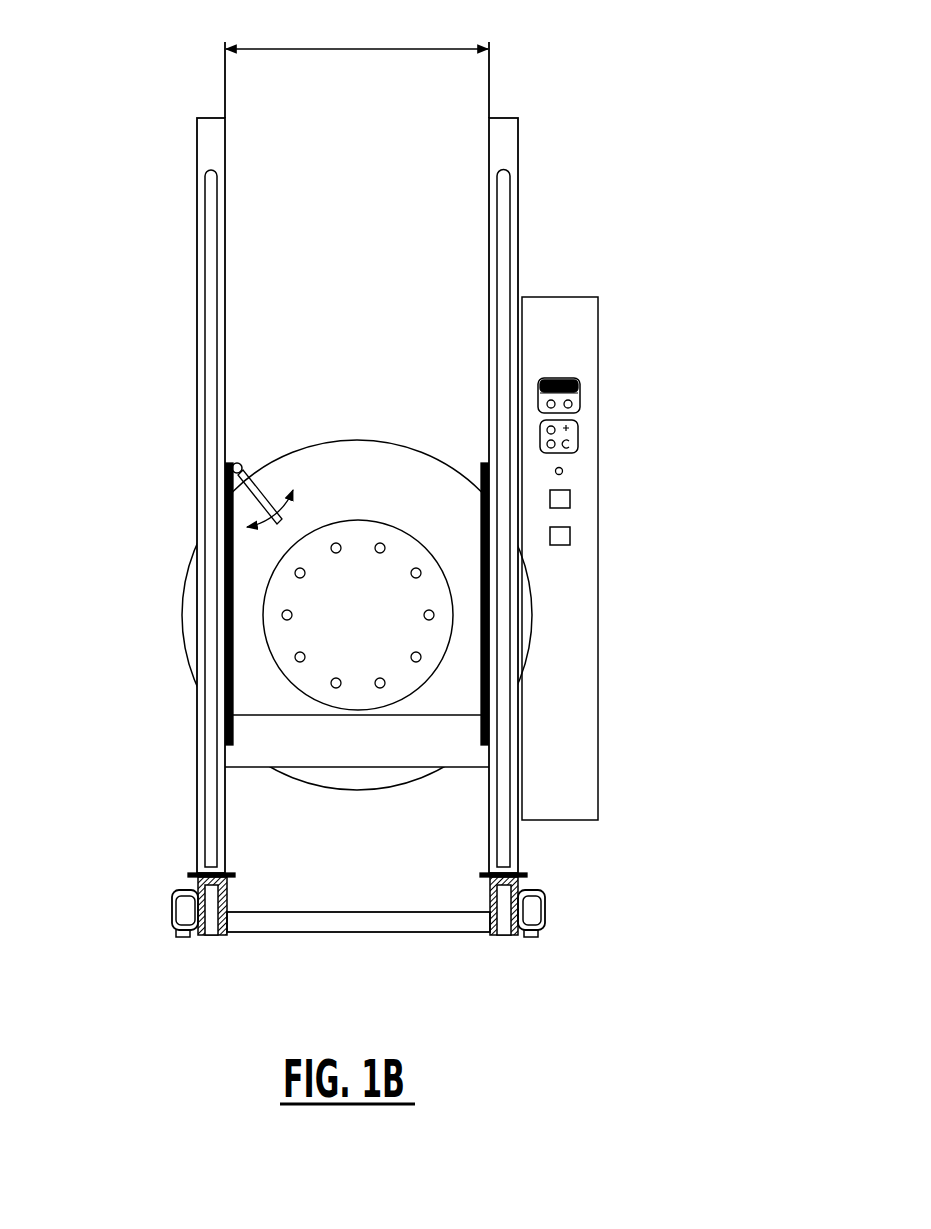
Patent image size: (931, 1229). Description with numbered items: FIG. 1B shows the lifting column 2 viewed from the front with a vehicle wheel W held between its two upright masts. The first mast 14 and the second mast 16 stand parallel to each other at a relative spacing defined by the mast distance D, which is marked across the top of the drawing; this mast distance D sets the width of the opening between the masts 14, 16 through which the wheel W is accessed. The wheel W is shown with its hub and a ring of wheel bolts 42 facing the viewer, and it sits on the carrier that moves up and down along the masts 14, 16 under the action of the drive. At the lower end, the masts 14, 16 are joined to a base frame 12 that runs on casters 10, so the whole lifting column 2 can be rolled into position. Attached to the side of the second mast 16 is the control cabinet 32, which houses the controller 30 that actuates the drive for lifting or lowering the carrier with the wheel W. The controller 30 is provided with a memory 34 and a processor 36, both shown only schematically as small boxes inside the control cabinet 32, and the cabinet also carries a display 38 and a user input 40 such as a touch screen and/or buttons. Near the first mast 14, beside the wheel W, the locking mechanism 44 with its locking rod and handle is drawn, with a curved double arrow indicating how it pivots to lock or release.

The lifting column 2 is at (668, 131).
The casters 10 is at (533, 937).
The base 12 is at (503, 935).
The first mast 14 is at (207, 147).
The second mast 16 is at (505, 140).
The controller 30 is at (696, 417).
The control cabinet 32 is at (565, 310).
The memory 34 is at (567, 498).
The processor 36 is at (567, 536).
The display 38 is at (565, 392).
The user input 40 is at (565, 443).
The wheel bolts 42 is at (380, 548).
The locking mechanism 44 is at (298, 462).
The wheel W is at (358, 465).
The mast distance D is at (357, 64).